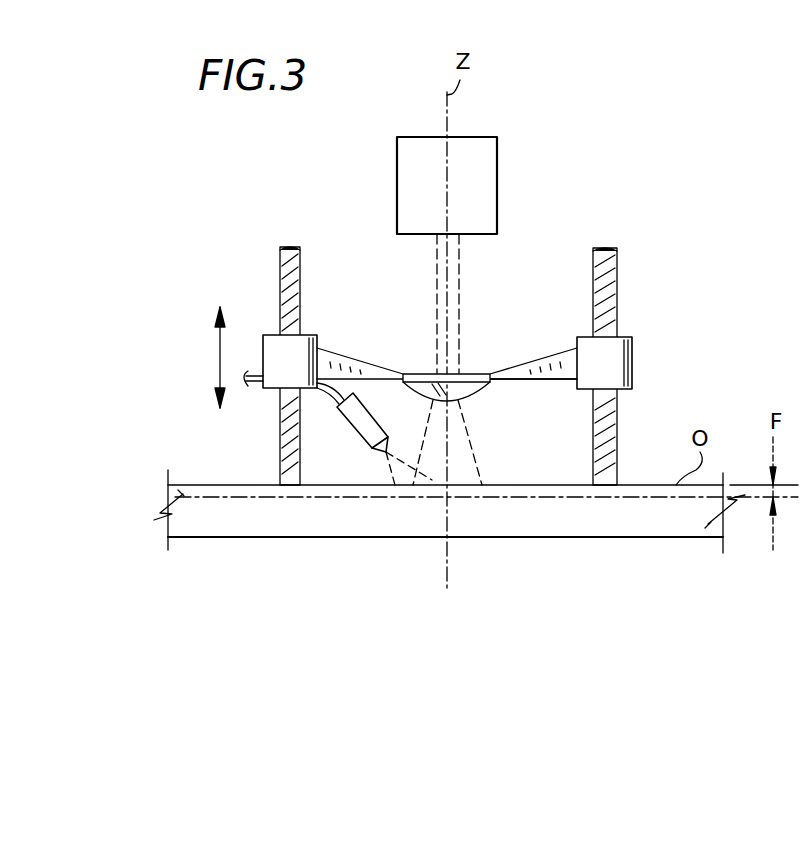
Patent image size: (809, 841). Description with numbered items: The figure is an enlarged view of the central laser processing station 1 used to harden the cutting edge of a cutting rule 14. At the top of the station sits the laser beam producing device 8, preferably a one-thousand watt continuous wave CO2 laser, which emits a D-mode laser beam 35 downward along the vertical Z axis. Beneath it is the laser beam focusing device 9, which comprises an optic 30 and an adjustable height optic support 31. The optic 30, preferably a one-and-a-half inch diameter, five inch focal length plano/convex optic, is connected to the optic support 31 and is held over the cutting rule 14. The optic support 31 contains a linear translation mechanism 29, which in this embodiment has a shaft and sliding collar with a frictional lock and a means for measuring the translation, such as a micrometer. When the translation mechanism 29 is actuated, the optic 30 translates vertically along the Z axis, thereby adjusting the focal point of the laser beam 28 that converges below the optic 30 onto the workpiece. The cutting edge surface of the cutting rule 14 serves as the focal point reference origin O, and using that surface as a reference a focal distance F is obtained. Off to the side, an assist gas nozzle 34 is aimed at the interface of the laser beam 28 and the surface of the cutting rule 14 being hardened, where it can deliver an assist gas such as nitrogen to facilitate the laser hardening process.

The central laser processing station 1 is at (625, 114).
The laser beam producing device 8 is at (477, 137).
The laser beam focusing device 9 is at (401, 337).
The cutting rule 14 is at (565, 537).
The laser beam 28 is at (468, 450).
The linear translation mechanism 29 is at (632, 350).
The optic 30 is at (470, 372).
The optic support 31 is at (552, 392).
The assist gas nozzle 34 is at (352, 425).
The D-mode laser beam 35 is at (459, 262).